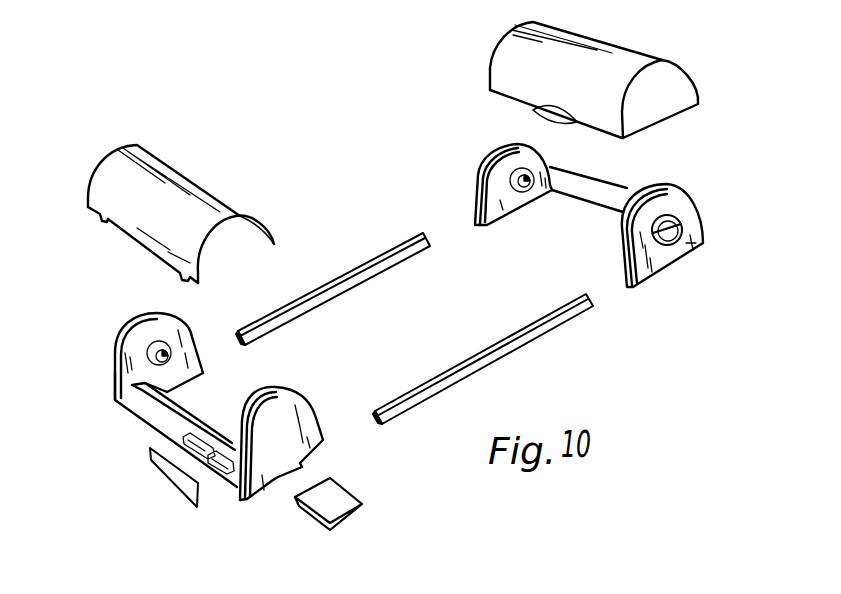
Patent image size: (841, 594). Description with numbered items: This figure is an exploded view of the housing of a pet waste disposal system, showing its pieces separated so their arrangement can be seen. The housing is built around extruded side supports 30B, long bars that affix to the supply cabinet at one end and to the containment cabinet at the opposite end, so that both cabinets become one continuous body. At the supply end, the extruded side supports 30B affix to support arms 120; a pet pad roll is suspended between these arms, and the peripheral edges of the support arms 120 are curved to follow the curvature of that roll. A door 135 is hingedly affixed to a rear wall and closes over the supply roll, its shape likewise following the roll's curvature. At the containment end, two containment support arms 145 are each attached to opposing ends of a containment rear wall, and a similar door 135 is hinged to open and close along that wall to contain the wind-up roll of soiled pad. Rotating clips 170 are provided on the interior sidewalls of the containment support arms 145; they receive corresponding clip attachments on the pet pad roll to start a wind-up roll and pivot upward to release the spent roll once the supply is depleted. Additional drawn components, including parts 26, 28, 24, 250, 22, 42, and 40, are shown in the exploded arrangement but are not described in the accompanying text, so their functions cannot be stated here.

The cover 26 is at (605, 53).
The door 135 is at (106, 173).
The bracket rod 28 is at (510, 172).
The extruded side supports 30B is at (343, 278).
The screw 24 is at (678, 224).
The end bracket 250 is at (688, 244).
The housing base 22 is at (140, 412).
The support arms 120 is at (127, 340).
The rotating clips 170 is at (170, 356).
The containment support arms 145 is at (263, 478).
The slots 42 is at (228, 491).
The block 40 is at (346, 506).